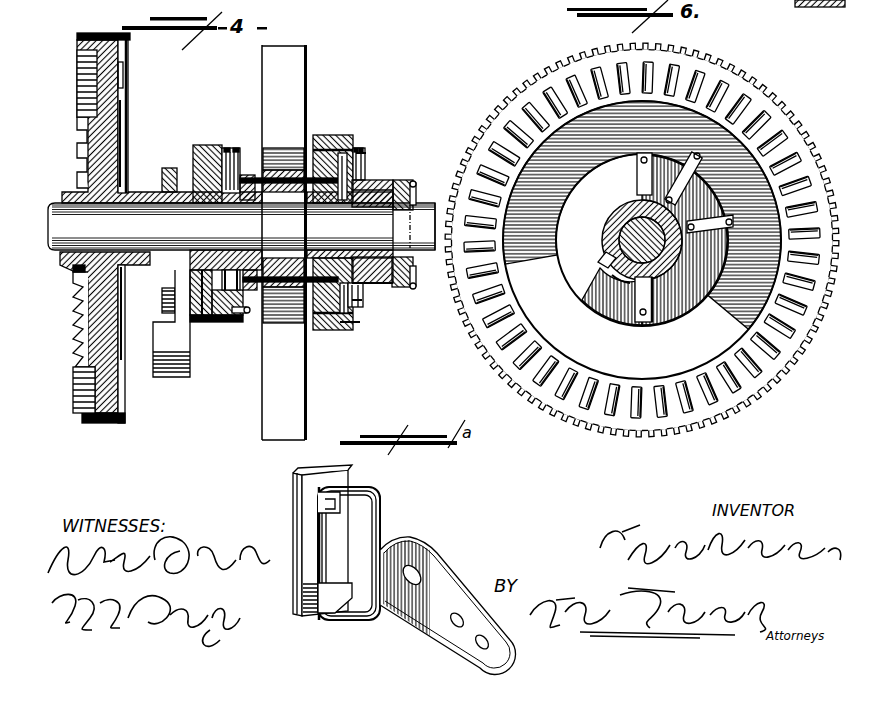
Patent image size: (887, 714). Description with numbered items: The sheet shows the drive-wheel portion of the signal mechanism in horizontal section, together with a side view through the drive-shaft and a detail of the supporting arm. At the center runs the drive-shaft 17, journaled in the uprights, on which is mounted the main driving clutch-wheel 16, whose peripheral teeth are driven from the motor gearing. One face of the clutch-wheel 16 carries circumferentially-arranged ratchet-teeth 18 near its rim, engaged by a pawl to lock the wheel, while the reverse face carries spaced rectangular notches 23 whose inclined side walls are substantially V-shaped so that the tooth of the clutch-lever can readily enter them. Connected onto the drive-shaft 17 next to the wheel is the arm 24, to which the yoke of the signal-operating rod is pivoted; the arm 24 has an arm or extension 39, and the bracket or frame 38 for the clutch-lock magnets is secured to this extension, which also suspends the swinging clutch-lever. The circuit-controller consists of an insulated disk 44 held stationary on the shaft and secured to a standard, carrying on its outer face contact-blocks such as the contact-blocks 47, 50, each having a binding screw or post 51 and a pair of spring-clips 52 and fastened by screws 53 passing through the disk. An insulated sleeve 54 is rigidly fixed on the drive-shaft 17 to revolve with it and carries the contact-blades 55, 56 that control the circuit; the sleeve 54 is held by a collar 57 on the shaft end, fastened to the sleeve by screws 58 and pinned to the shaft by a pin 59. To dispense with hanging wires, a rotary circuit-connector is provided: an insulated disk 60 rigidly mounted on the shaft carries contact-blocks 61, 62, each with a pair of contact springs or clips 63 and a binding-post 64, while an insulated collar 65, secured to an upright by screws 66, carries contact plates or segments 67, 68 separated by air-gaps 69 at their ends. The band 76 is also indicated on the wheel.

In FIG. 4, the main driving clutch-wheel 16 is at (113, 131).
In FIG. 6, the main driving clutch-wheel 16 is at (642, 240).
In FIG. 4, the drive-shaft 17 is at (241, 226).
In FIG. 4, the ratchet-teeth 18 is at (78, 356).
In FIG. 4, the notches 23 is at (130, 73).
In FIG. 6, the notches 23 is at (540, 351).
In FIG. 4, the arm 24 is at (162, 292).
In FIG. 6a, the arm 24 is at (440, 575).
In FIG. 6a, the bracket or frame 38 is at (380, 515).
In FIG. 6a, the arm or extension 39 is at (322, 540).
In FIG. 4, the insulated disk 44 is at (342, 324).
In FIG. 4, the contact-block 47 is at (362, 155).
In FIG. 4, the contact-block 50 is at (362, 320).
In FIG. 4, the binding screw or post 51 is at (362, 150).
In FIG. 4, the spring-clips 52 is at (370, 176).
In FIG. 4, the screws 53 is at (326, 136).
In FIG. 4, the insulated sleeve 54 is at (384, 170).
In FIG. 4, the contact-blade 55 is at (366, 181).
In FIG. 4, the contact-blade 56 is at (356, 286).
In FIG. 4, the collar 57 is at (418, 188).
In FIG. 4, the screws 58 is at (399, 192).
In FIG. 4, the pin 59 is at (447, 275).
In FIG. 6, the pin 59 is at (639, 240).
In FIG. 4, the insulated disk 60 is at (197, 322).
In FIG. 6, the insulated disk 60 is at (604, 246).
In FIG. 4, the contact-block 61 is at (214, 150).
In FIG. 6, the contact-block 61 is at (637, 174).
In FIG. 4, the contact-block 62 is at (222, 322).
In FIG. 6, the contact-block 62 is at (665, 312).
In FIG. 4, the contact springs or clips 63 is at (242, 176).
In FIG. 4, the binding-post 64 is at (248, 314).
In FIG. 6, the binding-post 64 is at (702, 160).
In FIG. 4, the insulated collar 65 is at (266, 162).
In FIG. 4, the screws 66 is at (285, 172).
In FIG. 6, the contact plate or segment 67 is at (608, 196).
In FIG. 6, the contact plate or segment 68 is at (618, 282).
In FIG. 6, the air-gaps 69 is at (604, 258).
In FIG. 4, the band 76 is at (126, 395).